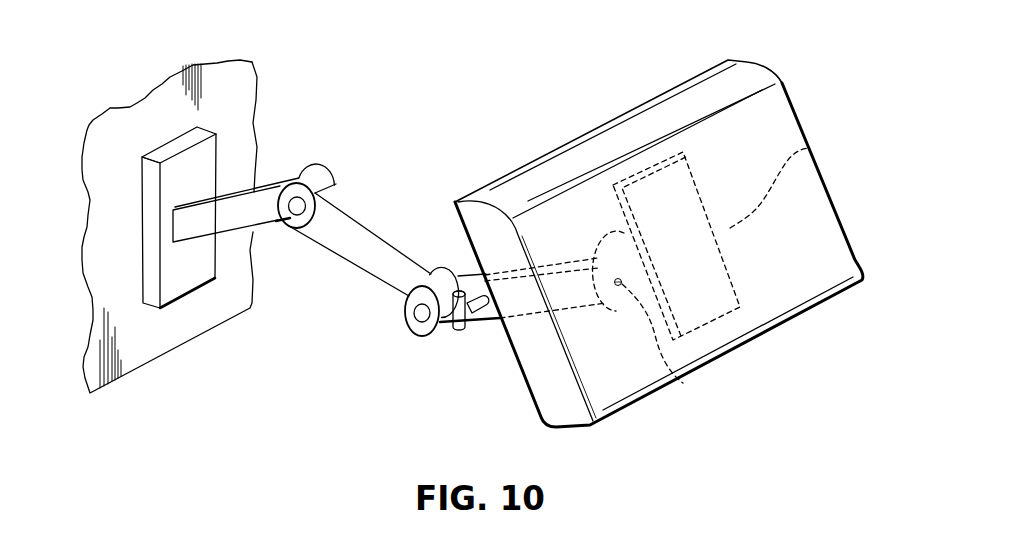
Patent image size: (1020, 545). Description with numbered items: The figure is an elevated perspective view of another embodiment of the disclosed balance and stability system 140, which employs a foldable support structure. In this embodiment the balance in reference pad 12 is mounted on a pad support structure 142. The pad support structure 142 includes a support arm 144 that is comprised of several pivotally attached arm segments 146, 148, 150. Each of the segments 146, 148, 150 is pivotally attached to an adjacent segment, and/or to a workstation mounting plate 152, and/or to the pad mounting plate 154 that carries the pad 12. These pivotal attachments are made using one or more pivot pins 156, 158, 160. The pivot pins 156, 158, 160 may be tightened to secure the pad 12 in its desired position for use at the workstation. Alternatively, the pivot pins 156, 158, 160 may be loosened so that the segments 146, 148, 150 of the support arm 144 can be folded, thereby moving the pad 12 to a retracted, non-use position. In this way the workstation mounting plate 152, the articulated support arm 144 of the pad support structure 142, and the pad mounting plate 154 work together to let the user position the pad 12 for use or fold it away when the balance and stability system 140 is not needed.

The balance in reference pad 12 is at (798, 115).
The balance and stability system 140 is at (529, 113).
The pad support structure 142 is at (344, 148).
The support arm 144 is at (467, 278).
The arm segment 146 is at (233, 212).
The arm segment 148 is at (362, 263).
The arm segment 150 is at (479, 324).
The workstation mounting plate 152 is at (188, 174).
The pad mounting plate 154 is at (810, 148).
The pivot pin 156 is at (297, 206).
The pivot pin 158 is at (414, 318).
The pivot pin 160 is at (683, 383).